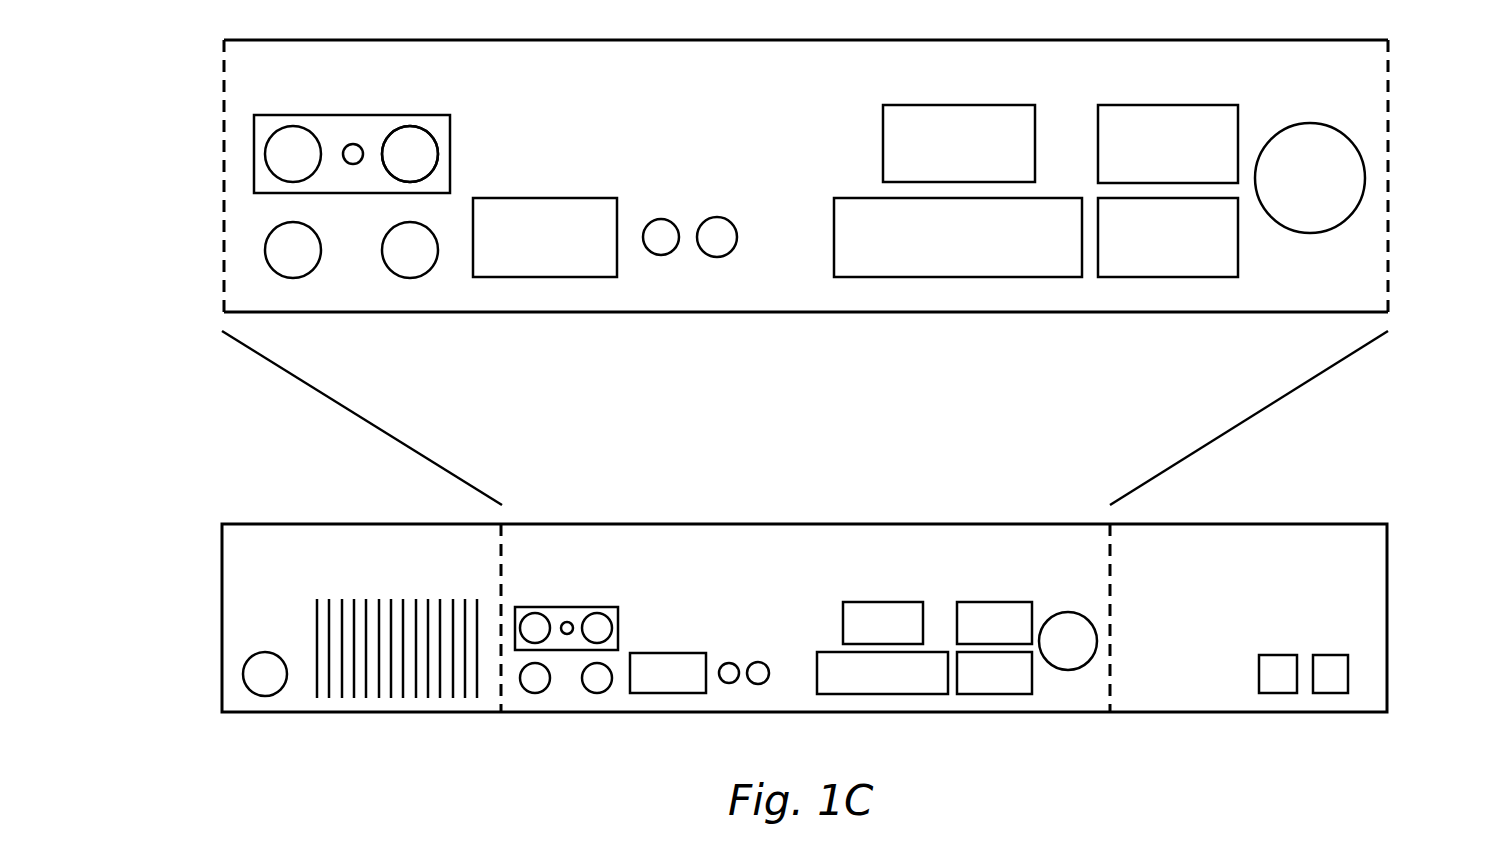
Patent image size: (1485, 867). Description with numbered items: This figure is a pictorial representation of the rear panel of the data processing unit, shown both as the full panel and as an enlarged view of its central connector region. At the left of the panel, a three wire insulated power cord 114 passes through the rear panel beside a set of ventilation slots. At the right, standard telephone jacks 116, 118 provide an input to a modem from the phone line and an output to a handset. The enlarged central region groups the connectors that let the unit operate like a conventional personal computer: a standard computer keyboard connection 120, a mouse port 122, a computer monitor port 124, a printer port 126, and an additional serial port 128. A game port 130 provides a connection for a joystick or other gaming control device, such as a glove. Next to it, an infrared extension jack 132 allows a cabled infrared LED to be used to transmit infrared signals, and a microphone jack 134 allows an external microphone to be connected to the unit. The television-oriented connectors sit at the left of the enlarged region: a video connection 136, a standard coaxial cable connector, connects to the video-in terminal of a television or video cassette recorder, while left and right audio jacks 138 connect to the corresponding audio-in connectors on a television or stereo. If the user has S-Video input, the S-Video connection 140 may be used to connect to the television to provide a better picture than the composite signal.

The power cord 114 is at (243, 675).
The telephone jack 116 is at (1279, 655).
The telephone jack 118 is at (1335, 655).
The computer keyboard connection 120 is at (1365, 178).
The mouse port 122 is at (1199, 105).
The computer monitor port 124 is at (995, 105).
The printer port 126 is at (888, 277).
The serial port 128 is at (1150, 277).
The game port 130 is at (577, 198).
The infrared extension jack 132 is at (661, 219).
The microphone jack 134 is at (737, 239).
The video connection 136 is at (440, 154).
The left and right audio jacks 138 is at (273, 173).
The S-Video connection 140 is at (387, 223).